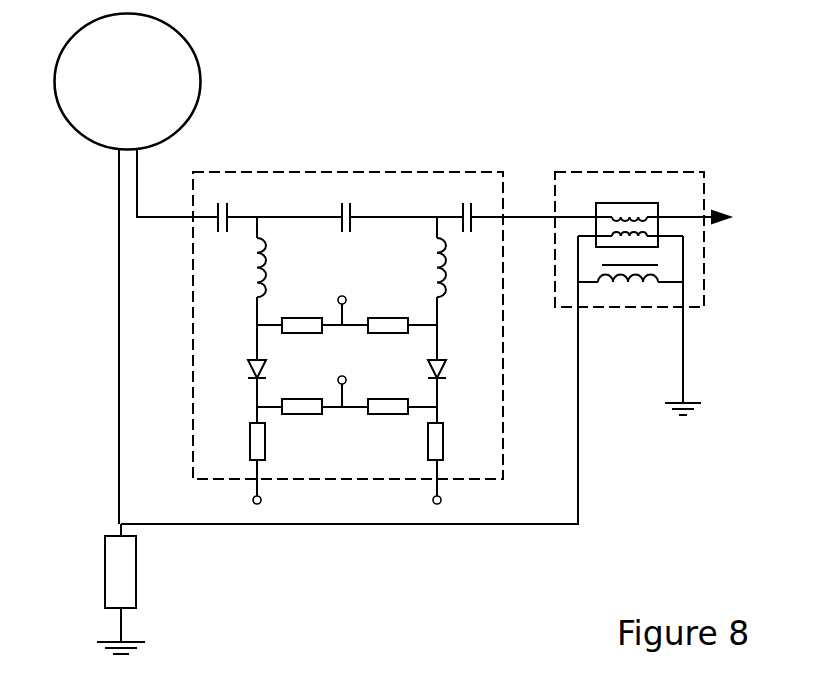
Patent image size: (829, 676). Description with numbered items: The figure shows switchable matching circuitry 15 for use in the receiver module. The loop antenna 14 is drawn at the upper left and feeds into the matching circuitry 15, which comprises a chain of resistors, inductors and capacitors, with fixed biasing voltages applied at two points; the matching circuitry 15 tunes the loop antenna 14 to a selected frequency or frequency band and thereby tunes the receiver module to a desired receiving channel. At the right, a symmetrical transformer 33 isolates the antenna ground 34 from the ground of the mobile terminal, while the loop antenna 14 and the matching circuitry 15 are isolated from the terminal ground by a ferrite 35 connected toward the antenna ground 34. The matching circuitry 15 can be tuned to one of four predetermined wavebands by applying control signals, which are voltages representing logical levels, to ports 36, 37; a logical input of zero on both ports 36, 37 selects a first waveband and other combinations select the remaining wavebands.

The loop antenna 14 is at (205, 68).
The matching circuitry 15 is at (388, 150).
The symmetrical transformer 33 is at (605, 148).
The antenna ground 34 is at (136, 655).
The ferrite 35 is at (140, 583).
The port 36 is at (273, 501).
The port 37 is at (453, 501).